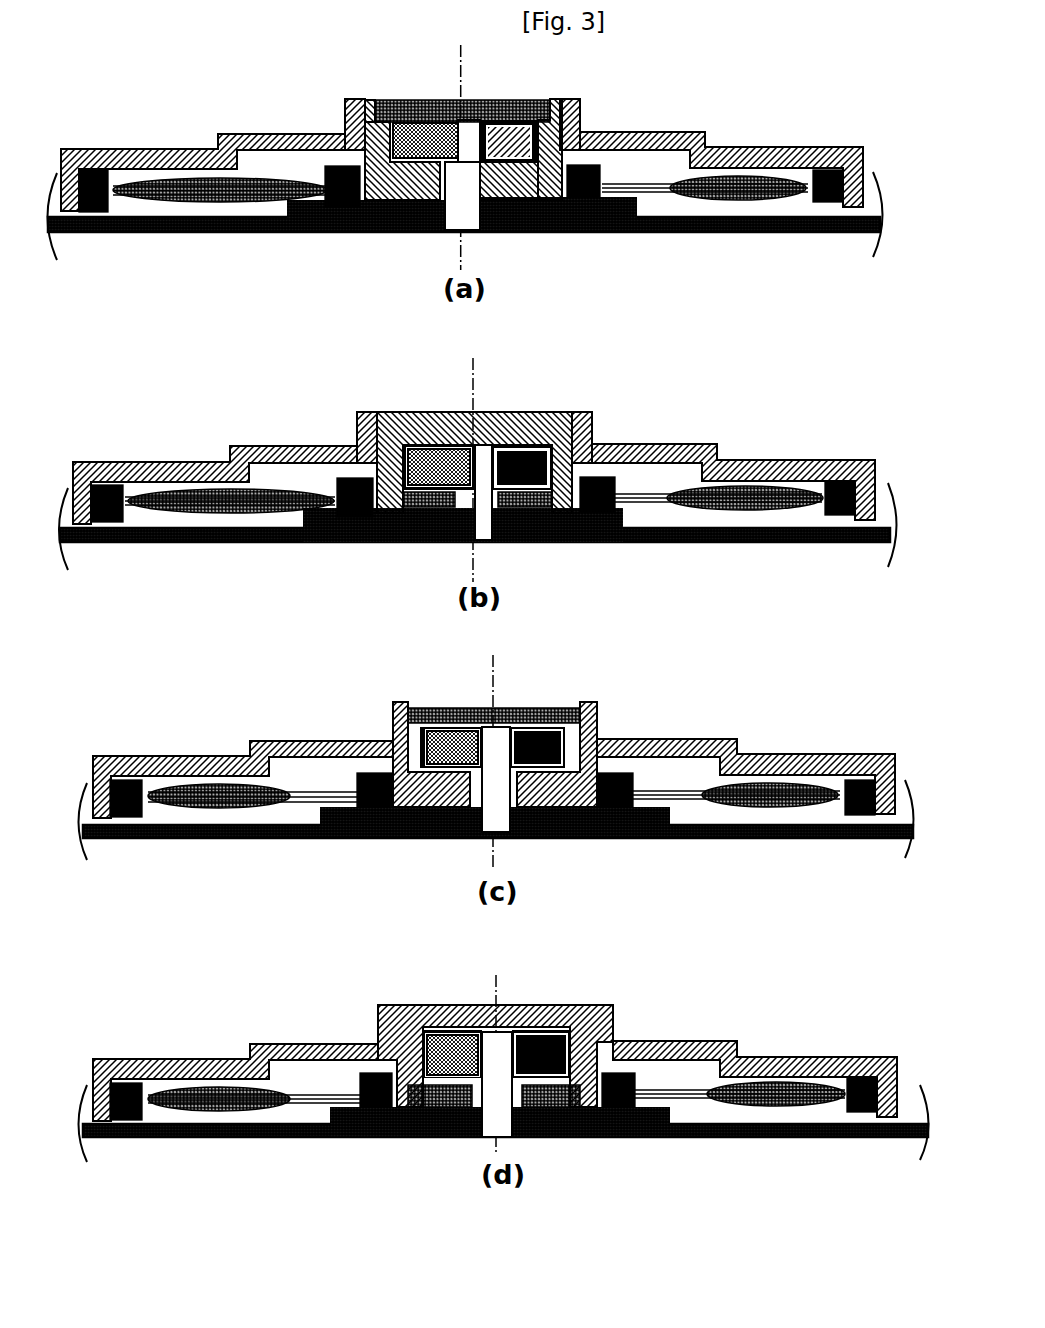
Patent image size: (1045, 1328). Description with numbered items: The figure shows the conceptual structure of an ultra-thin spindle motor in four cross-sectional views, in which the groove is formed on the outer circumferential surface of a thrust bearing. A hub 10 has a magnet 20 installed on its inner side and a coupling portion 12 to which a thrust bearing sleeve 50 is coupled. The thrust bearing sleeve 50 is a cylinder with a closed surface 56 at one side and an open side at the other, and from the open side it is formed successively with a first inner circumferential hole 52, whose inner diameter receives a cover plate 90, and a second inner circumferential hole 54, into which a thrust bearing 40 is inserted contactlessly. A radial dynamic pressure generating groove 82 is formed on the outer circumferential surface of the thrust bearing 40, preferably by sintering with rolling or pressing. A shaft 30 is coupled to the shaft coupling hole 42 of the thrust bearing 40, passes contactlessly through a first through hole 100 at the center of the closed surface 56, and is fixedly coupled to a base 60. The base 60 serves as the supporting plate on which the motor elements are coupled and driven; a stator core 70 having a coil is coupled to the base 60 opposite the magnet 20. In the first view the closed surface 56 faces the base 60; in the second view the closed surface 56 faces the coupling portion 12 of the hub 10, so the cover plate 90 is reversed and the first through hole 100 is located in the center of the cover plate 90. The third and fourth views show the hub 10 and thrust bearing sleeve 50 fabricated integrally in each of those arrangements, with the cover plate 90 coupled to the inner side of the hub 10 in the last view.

The hub 10 is at (220, 135).
The coupling portion 12 is at (347, 113).
The magnet 20 is at (117, 231).
The shaft 30 is at (468, 122).
The thrust bearing 40 is at (508, 122).
The shaft coupling hole 42 is at (605, 229).
The thrust bearing sleeve 50 is at (345, 140).
The first inner circumferential hole 52 is at (547, 108).
The second inner circumferential hole 54 is at (570, 102).
The closed surface 56 is at (410, 230).
The base 60 is at (313, 231).
The stator core 70 is at (180, 200).
The radial dynamic pressure generating groove 82 is at (395, 107).
The cover plate 90 is at (440, 113).
The first through hole 100 is at (533, 229).